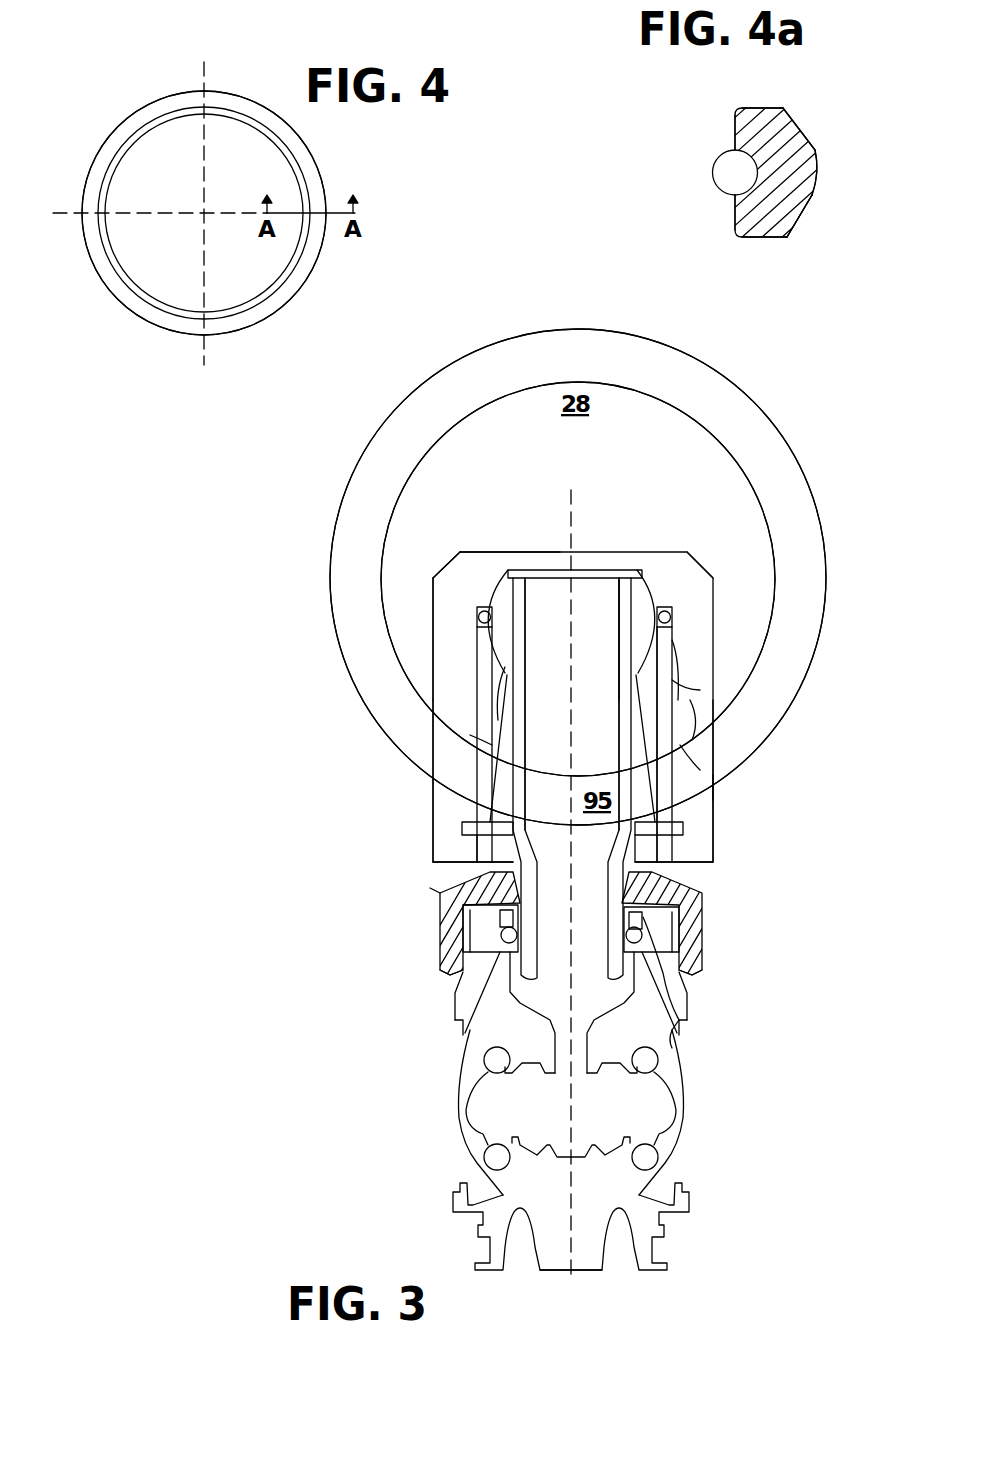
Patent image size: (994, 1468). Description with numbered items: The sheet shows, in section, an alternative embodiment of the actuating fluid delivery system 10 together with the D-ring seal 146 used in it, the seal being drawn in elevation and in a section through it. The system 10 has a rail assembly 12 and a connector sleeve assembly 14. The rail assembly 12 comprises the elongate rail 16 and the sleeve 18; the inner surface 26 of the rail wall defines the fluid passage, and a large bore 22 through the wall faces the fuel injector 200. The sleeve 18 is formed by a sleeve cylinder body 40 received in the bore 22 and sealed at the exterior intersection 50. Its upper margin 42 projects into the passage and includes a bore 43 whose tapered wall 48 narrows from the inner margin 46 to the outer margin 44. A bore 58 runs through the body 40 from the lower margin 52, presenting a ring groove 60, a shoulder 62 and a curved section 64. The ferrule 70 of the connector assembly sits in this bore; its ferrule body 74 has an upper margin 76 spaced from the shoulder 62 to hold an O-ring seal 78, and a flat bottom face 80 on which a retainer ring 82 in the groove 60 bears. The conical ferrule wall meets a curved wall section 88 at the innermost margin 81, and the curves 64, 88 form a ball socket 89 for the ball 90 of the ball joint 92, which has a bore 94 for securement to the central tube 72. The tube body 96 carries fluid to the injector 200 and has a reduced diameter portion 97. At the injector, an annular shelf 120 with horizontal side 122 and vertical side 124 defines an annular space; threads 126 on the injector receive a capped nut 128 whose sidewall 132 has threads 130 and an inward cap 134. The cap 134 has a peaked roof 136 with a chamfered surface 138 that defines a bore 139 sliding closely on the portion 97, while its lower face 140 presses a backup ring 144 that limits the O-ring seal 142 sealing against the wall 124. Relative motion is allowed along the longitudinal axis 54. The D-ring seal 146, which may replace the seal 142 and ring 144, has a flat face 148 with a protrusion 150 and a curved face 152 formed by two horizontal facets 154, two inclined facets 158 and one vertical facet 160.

In FIG. 3, the actuating fluid delivery system 10 is at (330, 458).
In FIG. 3, the rail assembly 12 is at (373, 434).
In FIG. 3, the connector sleeve assembly 14 is at (433, 590).
In FIG. 3, the elongate rail 16 is at (420, 386).
In FIG. 3, the sleeve 18 is at (377, 520).
In FIG. 3, the bore 22 is at (470, 745).
In FIG. 3, the inner surface 26 is at (695, 420).
In FIG. 3, the sleeve cylinder body 40 is at (467, 568).
In FIG. 3, the upper margin 42 is at (507, 573).
In FIG. 3, the bore 43 is at (633, 562).
In FIG. 3, the outer margin 44 is at (508, 572).
In FIG. 3, the inner margin 46 is at (527, 577).
In FIG. 3, the wall 48 is at (657, 580).
In FIG. 3, the exterior intersection 50 is at (433, 780).
In FIG. 3, the lower margin 52 is at (700, 867).
In FIG. 3, the longitudinal axis 54 is at (575, 1277).
In FIG. 3, the bore 58 is at (672, 662).
In FIG. 3, the ring groove 60 is at (703, 850).
In FIG. 3, the shoulder 62 is at (465, 605).
In FIG. 3, the curved section 64 is at (477, 600).
In FIG. 3, the ferrule 70 is at (713, 795).
In FIG. 3, the central tube 72 is at (660, 748).
In FIG. 3, the ferrule body 74 is at (655, 698).
In FIG. 3, the upper margin 76 is at (672, 627).
In FIG. 3, the O-ring seal 78 is at (478, 625).
In FIG. 3, the bottom face 80 is at (480, 755).
In FIG. 3, the innermost margin 81 is at (642, 680).
In FIG. 3, the retainer ring 82 is at (470, 850).
In FIG. 3, the curved wall section 88 is at (500, 660).
In FIG. 3, the ball socket 89 is at (490, 580).
In FIG. 3, the ball 90 is at (502, 620).
In FIG. 3, the ball joint 92 is at (713, 582).
In FIG. 3, the bore 94 is at (592, 570).
In FIG. 3, the tube body 96 is at (700, 897).
In FIG. 3, the reduced diameter portion 97 is at (667, 1040).
In FIG. 3, the annular shelf 120 is at (498, 922).
In FIG. 3, the horizontal side 122 is at (450, 975).
In FIG. 3, the vertical side 124 is at (462, 1065).
In FIG. 3, the threads 126 is at (680, 967).
In FIG. 3, the capped nut 128 is at (702, 947).
In FIG. 3, the threads 130 is at (680, 932).
In FIG. 3, the sidewall 132 is at (455, 950).
In FIG. 3, the cap 134 is at (440, 893).
In FIG. 3, the peaked roof 136 is at (493, 872).
In FIG. 3, the chamfered surface 138 is at (470, 868).
In FIG. 3, the bore 139 is at (515, 905).
In FIG. 3, the lower face 140 is at (455, 1020).
In FIG. 3, the O-ring seal 142 is at (673, 1013).
In FIG. 3, the backup ring 144 is at (680, 997).
In FIG. 4, the D-ring seal 146 is at (118, 124).
In FIG. 4A, the D-ring seal 146 is at (790, 105).
In FIG. 4, the flat face 148 is at (130, 285).
In FIG. 4A, the flat face 148 is at (737, 132).
In FIG. 4, the protrusion 150 is at (288, 270).
In FIG. 4A, the protrusion 150 is at (715, 172).
In FIG. 4, the curved face 152 is at (308, 258).
In FIG. 4A, the curved face 152 is at (815, 210).
In FIG. 4A, the horizontal facets 154 is at (765, 108).
In FIG. 4A, the inclined facets 158 is at (810, 130).
In FIG. 4A, the vertical facet 160 is at (818, 172).
In FIG. 3, the fuel injector 200 is at (452, 1165).